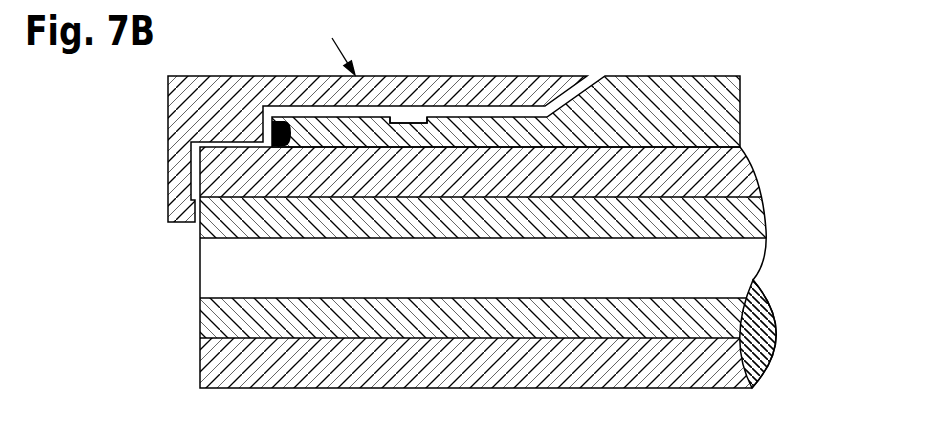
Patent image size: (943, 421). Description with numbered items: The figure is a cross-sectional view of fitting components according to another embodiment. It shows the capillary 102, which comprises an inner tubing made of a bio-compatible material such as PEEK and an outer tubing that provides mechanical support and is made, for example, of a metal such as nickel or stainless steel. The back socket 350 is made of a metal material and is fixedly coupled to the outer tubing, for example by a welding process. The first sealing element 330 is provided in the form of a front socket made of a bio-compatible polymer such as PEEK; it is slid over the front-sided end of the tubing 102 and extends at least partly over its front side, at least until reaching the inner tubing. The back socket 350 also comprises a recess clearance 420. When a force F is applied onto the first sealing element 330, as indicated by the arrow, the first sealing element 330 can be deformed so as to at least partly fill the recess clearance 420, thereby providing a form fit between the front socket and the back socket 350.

The capillary 102 is at (522, 221).
The first sealing element 330 is at (263, 90).
The back socket 350 is at (697, 88).
The recess clearance 420 is at (403, 117).
The force F is at (337, 42).